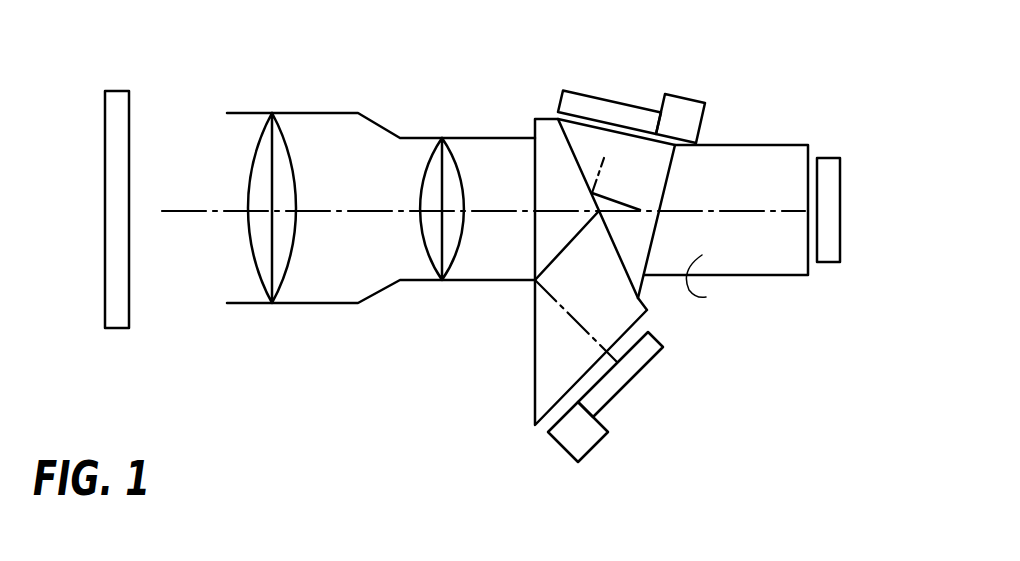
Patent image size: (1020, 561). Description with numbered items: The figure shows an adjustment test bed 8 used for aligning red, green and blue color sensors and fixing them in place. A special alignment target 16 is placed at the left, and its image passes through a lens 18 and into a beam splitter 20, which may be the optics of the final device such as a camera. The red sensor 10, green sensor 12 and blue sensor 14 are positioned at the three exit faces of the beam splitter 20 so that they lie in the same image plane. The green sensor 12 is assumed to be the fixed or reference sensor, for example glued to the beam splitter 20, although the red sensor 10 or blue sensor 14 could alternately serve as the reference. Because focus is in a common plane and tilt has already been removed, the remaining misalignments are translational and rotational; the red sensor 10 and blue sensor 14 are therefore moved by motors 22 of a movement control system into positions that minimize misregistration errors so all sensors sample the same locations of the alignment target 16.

The adjustment test bed 8 is at (421, 357).
The red sensor 10 is at (556, 90).
The green sensor 12 is at (828, 159).
The blue sensor 14 is at (653, 353).
The alignment target 16 is at (123, 92).
The lens 18 is at (380, 123).
The beam splitter 20 is at (556, 118).
The motors 22 is at (687, 92).